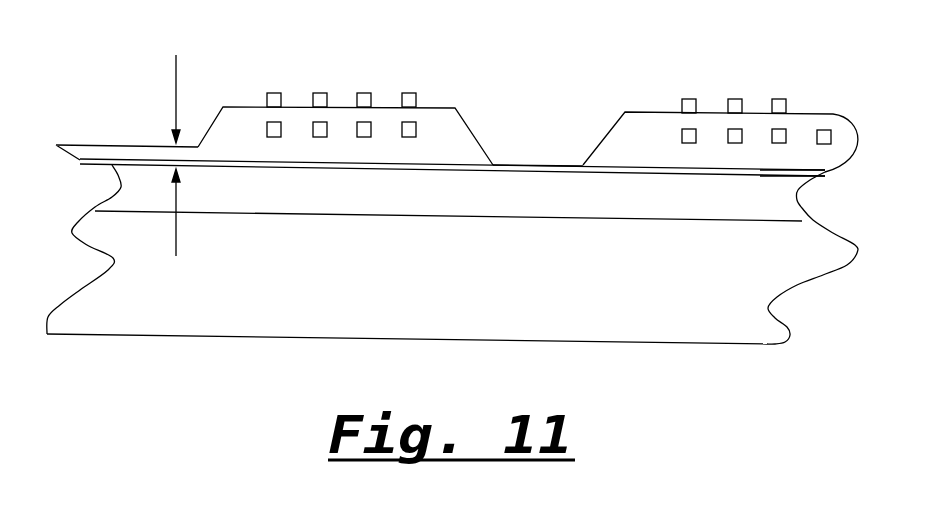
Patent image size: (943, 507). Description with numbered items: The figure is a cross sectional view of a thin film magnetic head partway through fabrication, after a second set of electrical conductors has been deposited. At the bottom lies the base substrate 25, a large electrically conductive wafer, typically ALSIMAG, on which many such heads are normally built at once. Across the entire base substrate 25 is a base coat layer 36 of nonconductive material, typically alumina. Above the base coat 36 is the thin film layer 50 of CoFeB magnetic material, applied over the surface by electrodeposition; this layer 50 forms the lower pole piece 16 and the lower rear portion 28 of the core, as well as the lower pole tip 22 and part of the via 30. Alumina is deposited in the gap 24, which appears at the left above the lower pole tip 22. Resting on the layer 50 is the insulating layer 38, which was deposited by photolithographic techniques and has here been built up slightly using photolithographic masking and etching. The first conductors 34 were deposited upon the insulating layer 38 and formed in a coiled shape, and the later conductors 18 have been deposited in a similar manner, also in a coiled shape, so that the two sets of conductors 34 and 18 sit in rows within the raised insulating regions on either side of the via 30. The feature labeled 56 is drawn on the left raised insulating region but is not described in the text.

The lower pole piece 16 is at (302, 165).
The conductors 18 is at (408, 93).
The lower pole tip 22 is at (112, 165).
The gap 24 is at (174, 152).
The base substrate 25 is at (262, 312).
The lower rear portion 28 is at (775, 175).
The via 30 is at (553, 165).
The conductors 34 is at (277, 137).
The base coat layer 36 is at (147, 190).
The insulating layer 38 is at (655, 122).
The thin film layer 50 is at (465, 172).
The first mesa 56 is at (447, 128).